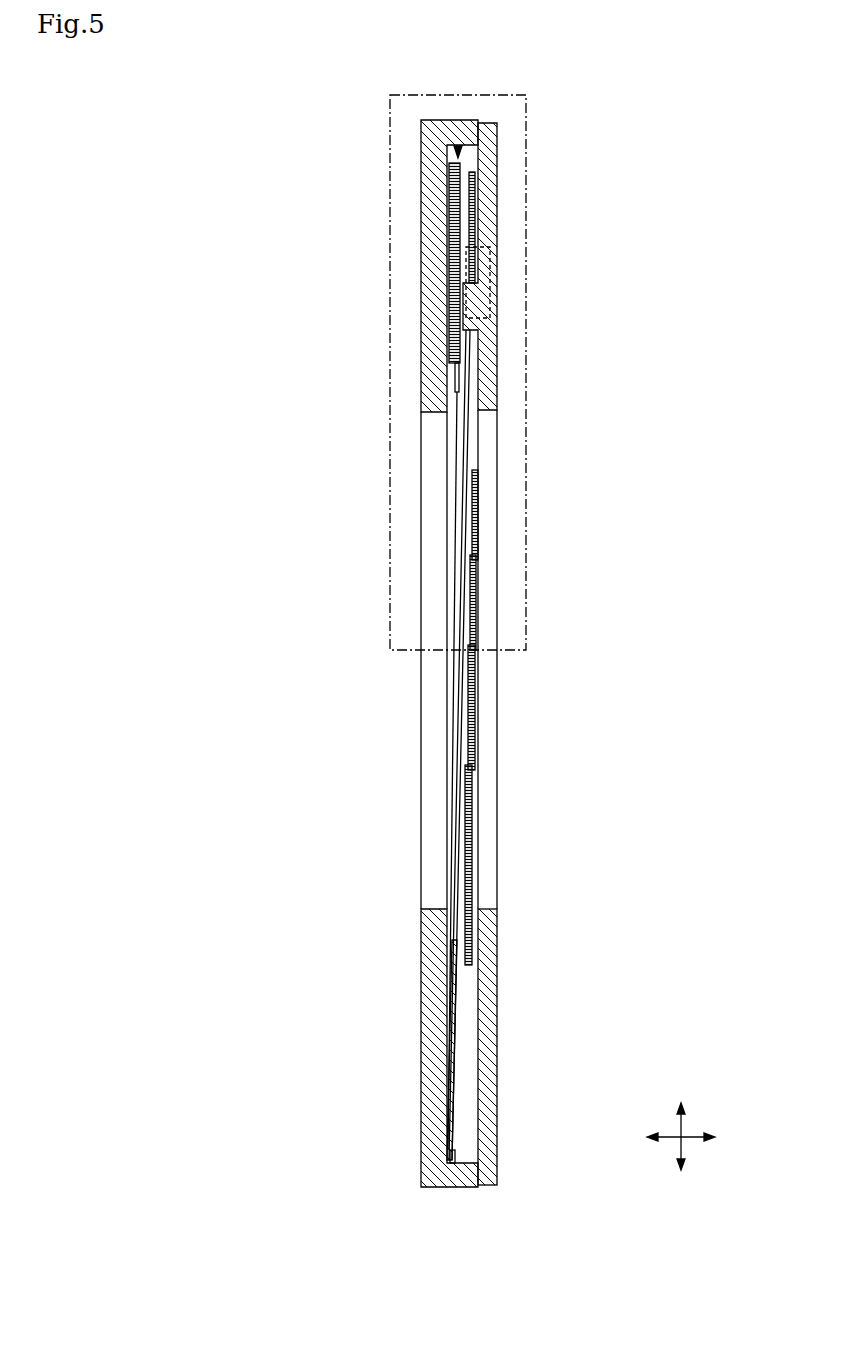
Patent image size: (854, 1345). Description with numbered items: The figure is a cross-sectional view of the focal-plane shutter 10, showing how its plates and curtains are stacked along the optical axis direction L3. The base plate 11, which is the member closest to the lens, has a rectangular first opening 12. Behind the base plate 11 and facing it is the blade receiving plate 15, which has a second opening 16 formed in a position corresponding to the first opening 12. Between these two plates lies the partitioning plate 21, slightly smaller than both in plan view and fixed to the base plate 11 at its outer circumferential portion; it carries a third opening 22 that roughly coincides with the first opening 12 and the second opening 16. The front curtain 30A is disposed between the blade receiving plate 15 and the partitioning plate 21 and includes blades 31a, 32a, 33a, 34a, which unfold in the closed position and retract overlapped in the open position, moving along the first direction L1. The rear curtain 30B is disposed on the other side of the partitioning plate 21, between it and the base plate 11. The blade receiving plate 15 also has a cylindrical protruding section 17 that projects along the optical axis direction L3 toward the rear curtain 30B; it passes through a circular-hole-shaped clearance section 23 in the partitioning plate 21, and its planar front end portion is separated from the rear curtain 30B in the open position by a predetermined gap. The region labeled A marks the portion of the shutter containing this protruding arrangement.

The focal-plane shutter 10 is at (370, 153).
The base plate 11 is at (421, 257).
The first opening 12 is at (435, 413).
The blade receiving plate 15 is at (497, 224).
The second opening 16 is at (492, 422).
The protruding section 17 is at (449, 303).
The partitioning plate 21 is at (480, 180).
The third opening 22 is at (465, 412).
The clearance section 23 is at (477, 292).
The front curtain 30A is at (643, 483).
The rear curtain 30B is at (458, 146).
The blade 31a is at (478, 470).
The blade 32a is at (476, 585).
The blade 33a is at (473, 728).
The blade 34a is at (473, 870).
The enlarged region A is at (530, 362).
The first direction L1 is at (683, 1126).
The optical axis direction L3 is at (685, 1139).